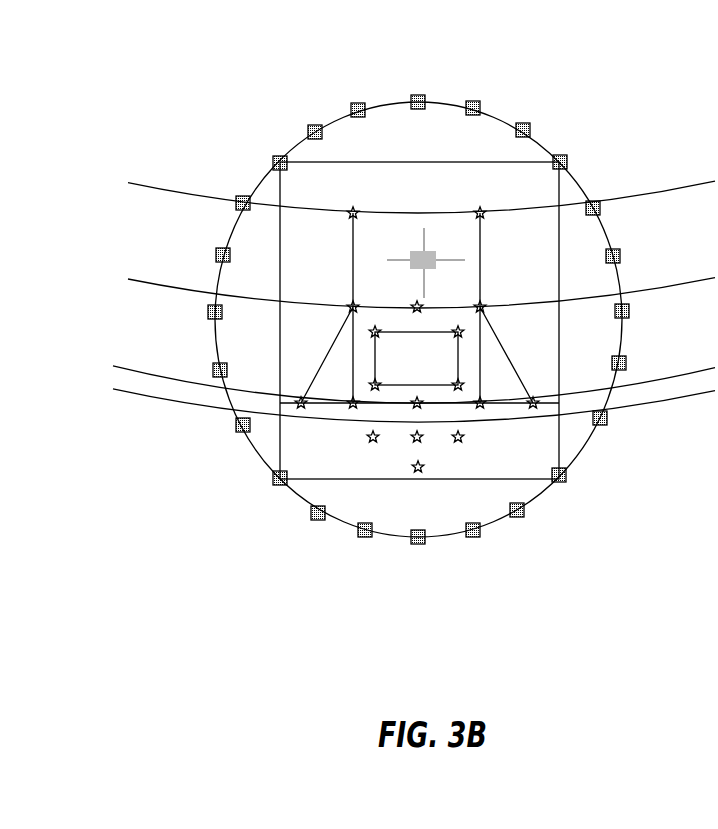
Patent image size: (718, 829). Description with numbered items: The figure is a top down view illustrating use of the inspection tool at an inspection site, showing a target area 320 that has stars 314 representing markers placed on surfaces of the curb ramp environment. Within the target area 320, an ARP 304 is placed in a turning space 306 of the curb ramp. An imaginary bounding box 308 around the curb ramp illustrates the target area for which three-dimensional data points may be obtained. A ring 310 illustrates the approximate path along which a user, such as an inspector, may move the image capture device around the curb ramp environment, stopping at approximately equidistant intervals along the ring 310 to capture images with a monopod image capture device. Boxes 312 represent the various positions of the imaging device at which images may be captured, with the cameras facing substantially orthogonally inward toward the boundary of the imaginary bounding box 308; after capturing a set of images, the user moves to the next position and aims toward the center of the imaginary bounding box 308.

The ARP 304 is at (428, 226).
The turning space 306 is at (481, 285).
The imaginary bounding box 308 is at (560, 258).
The ring 310 is at (622, 342).
The boxes 312 is at (352, 101).
The stars 314 is at (424, 469).
The target area 320 is at (194, 66).